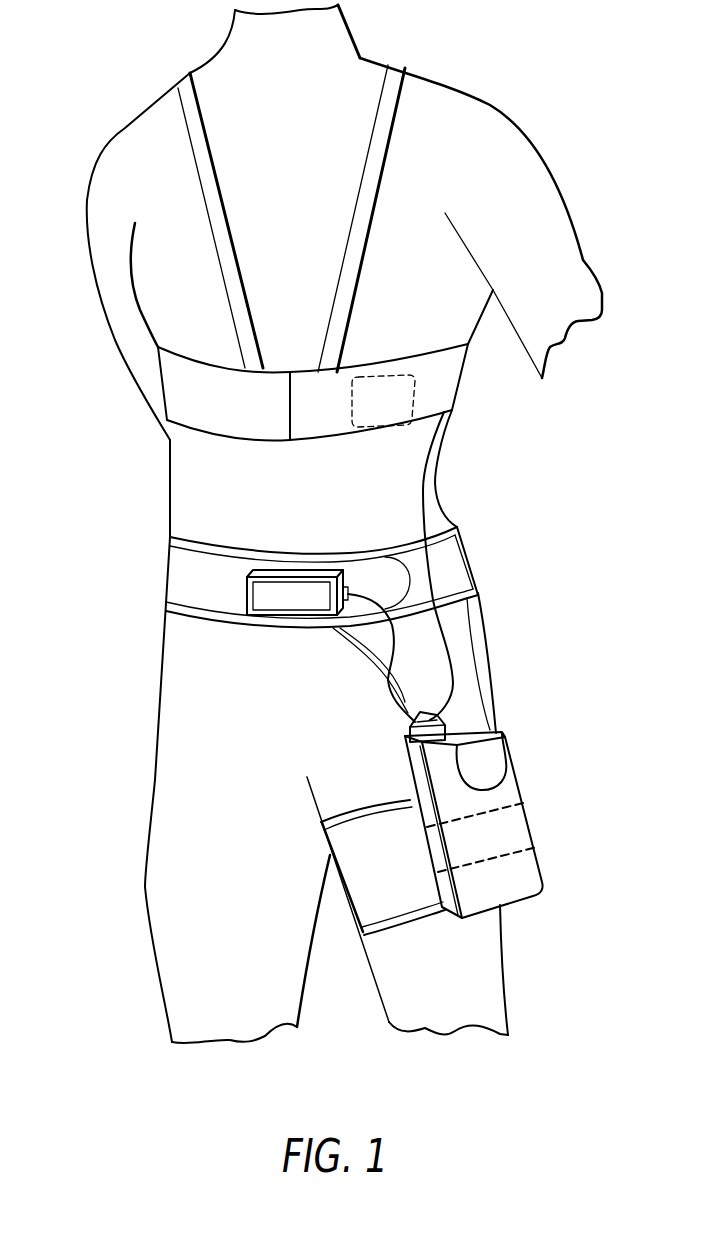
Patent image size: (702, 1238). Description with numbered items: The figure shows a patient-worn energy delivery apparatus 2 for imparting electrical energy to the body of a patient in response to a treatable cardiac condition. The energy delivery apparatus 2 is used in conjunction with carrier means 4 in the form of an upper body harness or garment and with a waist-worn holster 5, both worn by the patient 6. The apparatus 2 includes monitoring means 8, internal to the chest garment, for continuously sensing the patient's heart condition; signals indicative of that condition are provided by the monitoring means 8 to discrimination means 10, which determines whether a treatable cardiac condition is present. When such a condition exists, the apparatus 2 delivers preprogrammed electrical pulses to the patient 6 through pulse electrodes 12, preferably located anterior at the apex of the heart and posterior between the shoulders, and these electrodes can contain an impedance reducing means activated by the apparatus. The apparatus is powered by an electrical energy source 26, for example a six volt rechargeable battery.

The energy delivery apparatus 2 is at (498, 756).
The carrier means 4 is at (347, 300).
The waist-worn holster 5 is at (172, 575).
The patient 6 is at (95, 173).
The monitoring means 8 is at (235, 428).
The discrimination means 10 is at (538, 803).
The pulse electrodes 12 is at (352, 408).
The electrical energy source 26 is at (525, 873).